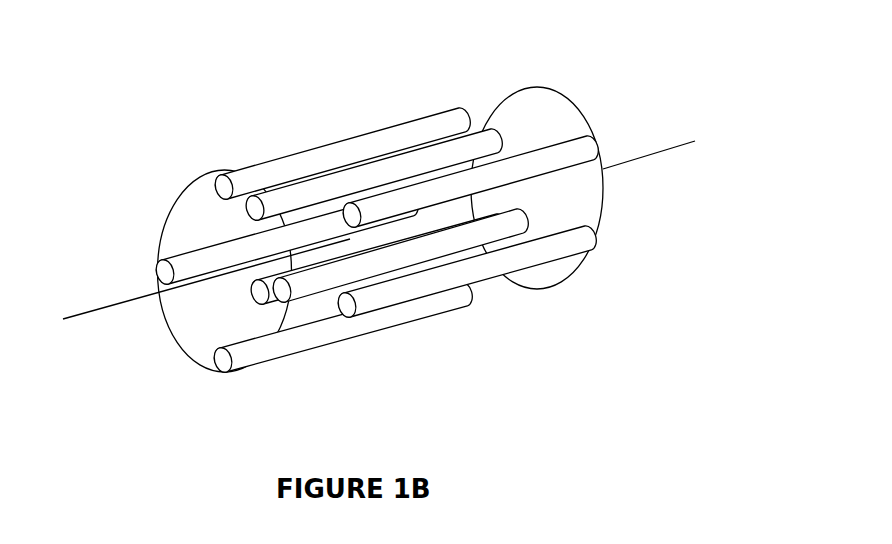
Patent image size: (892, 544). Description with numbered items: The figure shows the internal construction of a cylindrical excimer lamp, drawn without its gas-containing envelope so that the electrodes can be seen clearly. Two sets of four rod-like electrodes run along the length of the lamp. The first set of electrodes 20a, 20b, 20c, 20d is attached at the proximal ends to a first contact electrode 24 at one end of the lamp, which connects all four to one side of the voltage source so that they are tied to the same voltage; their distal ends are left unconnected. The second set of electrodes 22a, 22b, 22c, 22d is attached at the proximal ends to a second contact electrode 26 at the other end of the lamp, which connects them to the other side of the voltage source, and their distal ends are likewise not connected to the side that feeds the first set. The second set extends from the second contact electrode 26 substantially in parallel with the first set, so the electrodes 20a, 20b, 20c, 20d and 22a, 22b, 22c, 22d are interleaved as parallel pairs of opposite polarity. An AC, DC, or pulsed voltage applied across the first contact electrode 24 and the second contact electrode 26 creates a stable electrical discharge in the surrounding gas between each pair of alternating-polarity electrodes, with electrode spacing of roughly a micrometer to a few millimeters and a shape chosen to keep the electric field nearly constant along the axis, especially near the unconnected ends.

The electrode 20a is at (158, 270).
The electrode 20b is at (216, 181).
The electrode 20c is at (212, 368).
The electrode 20d is at (284, 301).
The electrode 22a is at (247, 212).
The electrode 22b is at (350, 203).
The electrode 22c is at (349, 318).
The electrode 22d is at (252, 293).
The first contact electrode 24 is at (161, 227).
The second contact electrode 26 is at (540, 88).